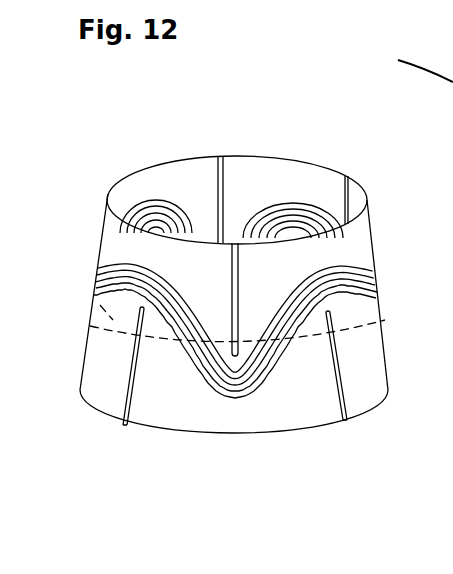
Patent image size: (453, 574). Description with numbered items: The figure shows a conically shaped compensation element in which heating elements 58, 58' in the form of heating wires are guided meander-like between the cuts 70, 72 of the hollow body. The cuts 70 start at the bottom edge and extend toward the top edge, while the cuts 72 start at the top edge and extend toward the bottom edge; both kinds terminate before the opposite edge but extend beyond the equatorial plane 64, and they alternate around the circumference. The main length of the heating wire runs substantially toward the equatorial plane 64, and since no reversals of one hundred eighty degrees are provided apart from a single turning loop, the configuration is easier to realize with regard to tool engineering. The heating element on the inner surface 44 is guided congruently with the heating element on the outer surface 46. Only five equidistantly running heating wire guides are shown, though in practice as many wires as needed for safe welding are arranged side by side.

The inner surface 44 is at (178, 181).
The cuts 72 is at (219, 156).
The heating element 58 is at (233, 178).
The heating element 58' is at (235, 386).
The equatorial plane 64 is at (92, 327).
The outer surface 46 is at (363, 376).
The cuts 70 is at (125, 427).